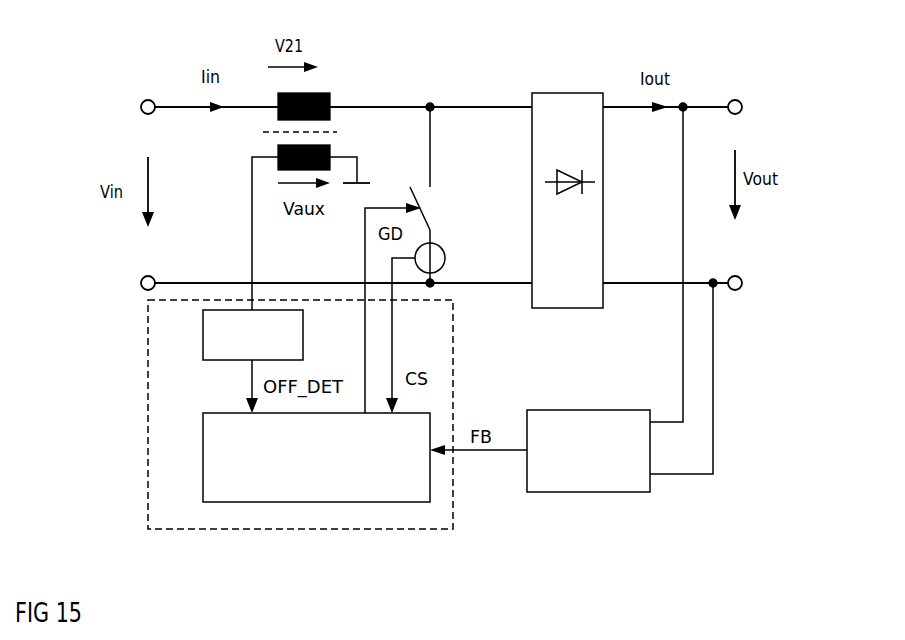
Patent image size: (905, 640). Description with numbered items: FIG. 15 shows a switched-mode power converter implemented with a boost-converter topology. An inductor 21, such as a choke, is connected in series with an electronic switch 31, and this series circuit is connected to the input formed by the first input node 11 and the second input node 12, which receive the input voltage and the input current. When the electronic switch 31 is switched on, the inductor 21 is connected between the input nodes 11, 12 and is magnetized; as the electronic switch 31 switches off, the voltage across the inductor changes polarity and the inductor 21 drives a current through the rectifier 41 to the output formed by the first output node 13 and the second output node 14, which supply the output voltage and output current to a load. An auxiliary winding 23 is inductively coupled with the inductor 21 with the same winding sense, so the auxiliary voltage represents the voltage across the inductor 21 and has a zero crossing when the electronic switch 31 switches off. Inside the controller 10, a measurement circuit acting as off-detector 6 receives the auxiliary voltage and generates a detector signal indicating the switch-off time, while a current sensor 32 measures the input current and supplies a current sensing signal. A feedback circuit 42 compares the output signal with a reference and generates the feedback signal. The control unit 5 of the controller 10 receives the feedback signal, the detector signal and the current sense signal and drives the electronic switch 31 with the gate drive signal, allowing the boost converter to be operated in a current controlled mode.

The control unit 5 is at (203, 465).
The off-detector 6 is at (203, 338).
The controller 10 is at (148, 335).
The first input node 11 is at (146, 101).
The second input node 12 is at (142, 280).
The first output node 13 is at (739, 100).
The second output node 14 is at (741, 287).
The inductor 21 is at (326, 93).
The auxiliary winding 23 is at (277, 149).
The electronic switch 31 is at (422, 162).
The current sensor 32 is at (445, 256).
The rectifier 41 is at (597, 93).
The feedback circuit 42 is at (597, 410).